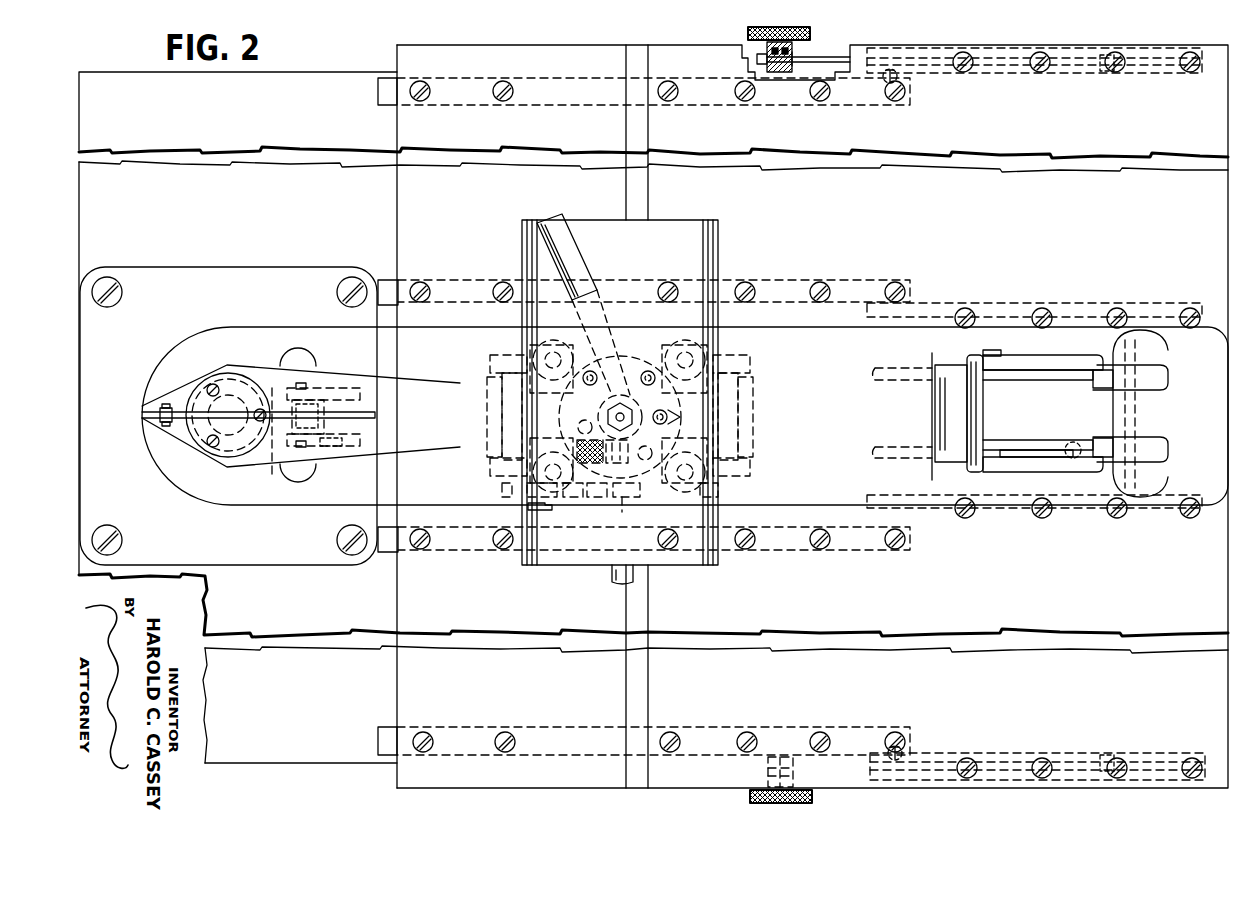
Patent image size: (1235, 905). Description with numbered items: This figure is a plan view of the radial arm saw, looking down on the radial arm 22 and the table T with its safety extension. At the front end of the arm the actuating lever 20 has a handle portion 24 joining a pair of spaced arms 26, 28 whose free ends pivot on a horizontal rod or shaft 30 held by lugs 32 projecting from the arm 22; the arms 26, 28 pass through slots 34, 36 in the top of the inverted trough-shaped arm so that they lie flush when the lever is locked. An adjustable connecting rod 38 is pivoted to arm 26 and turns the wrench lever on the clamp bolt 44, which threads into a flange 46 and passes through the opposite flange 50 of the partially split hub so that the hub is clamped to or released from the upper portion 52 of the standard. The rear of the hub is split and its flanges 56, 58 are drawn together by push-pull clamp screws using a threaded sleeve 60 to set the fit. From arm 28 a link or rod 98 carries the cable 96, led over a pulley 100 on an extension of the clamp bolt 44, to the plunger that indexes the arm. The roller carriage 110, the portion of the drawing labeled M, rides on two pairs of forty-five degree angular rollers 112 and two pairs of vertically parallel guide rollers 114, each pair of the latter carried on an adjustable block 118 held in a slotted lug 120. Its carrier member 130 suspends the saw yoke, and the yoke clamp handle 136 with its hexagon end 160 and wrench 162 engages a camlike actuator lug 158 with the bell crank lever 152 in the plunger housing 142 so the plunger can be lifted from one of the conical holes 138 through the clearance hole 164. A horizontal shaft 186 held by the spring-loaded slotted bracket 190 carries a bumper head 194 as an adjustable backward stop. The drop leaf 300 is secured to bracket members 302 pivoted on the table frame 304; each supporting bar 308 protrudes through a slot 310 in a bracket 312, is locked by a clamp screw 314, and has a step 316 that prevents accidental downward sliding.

The actuating lever 20 is at (955, 417).
The radial arm 22 is at (335, 327).
The handle portion 24 is at (978, 430).
The arm 26 is at (1015, 472).
The arm 28 is at (1030, 365).
The horizontal rod or shaft 30 is at (1135, 415).
The lugs 32 is at (1150, 380).
The slot 34 is at (1040, 475).
The slot 36 is at (1010, 357).
The adjustable connecting rod 38 is at (333, 446).
The clamp bolt 44 is at (272, 470).
The flange 46 is at (330, 412).
The flange 50 is at (330, 433).
The upper portion of the standard 52 is at (195, 440).
The flange 56 is at (142, 407).
The flange 58 is at (143, 420).
The threaded sleeve 60 is at (160, 432).
The cable 96 is at (352, 392).
The link or rod 98 is at (908, 368).
The pulley 100 is at (316, 392).
The roller carriage 110 is at (752, 410).
The angularly mounted rollers 112 is at (540, 352).
The vertically parallel rollers 114 is at (496, 362).
The adjustable block 118 is at (500, 402).
The slotted lug 120 is at (490, 428).
The carrier member 130 is at (718, 492).
The yoke clamp handle 136 is at (560, 214).
The conical holes 138 is at (590, 386).
The plunger housing 142 is at (622, 508).
The bell crank lever 152 is at (640, 490).
The camlike actuator lug 158 is at (668, 420).
The hexagon end 160 is at (620, 392).
The wrench 162 is at (650, 372).
The clearance hole 164 is at (1074, 460).
The horizontal shaft 186 is at (602, 505).
The slotted bracket 190 is at (540, 508).
The bumper head 194 is at (500, 492).
The drop leaf 300 is at (1213, 50).
The bracket members 302 is at (1150, 73).
The table frame 304 is at (688, 105).
The supporting bar 308 is at (835, 62).
The slot 310 is at (765, 50).
The bracket 312 is at (793, 50).
The clamp screw 314 is at (810, 30).
The step 316 is at (782, 72).
The mechanism M is at (722, 243).
The table T is at (395, 783).